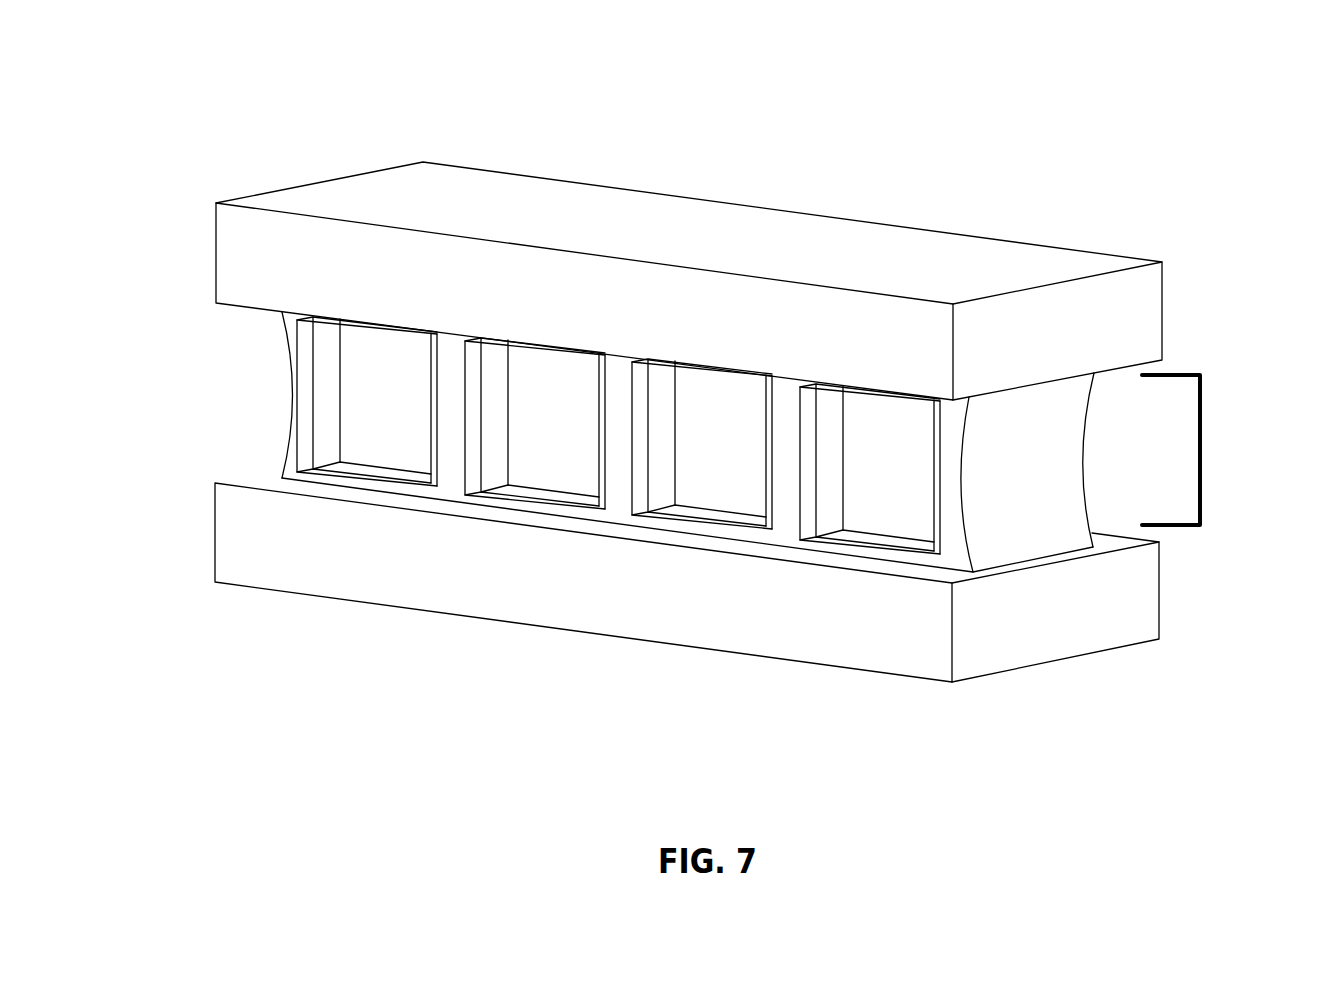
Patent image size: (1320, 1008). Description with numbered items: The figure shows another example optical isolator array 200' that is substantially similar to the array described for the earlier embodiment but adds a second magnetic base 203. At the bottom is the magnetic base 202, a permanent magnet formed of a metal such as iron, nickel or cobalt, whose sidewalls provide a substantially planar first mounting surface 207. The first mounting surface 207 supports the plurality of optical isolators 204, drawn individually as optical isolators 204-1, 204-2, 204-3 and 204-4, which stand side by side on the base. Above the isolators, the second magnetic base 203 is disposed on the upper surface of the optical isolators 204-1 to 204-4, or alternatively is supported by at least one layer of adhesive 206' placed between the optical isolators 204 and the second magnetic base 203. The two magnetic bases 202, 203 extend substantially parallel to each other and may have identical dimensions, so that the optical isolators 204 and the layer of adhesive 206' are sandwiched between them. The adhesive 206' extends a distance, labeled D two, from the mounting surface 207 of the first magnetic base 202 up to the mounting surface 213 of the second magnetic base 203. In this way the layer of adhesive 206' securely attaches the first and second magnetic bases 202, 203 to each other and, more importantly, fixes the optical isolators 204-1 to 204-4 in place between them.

The optical isolator array 200' is at (702, 364).
The magnetic base 202 is at (1155, 607).
The second magnetic base 203 is at (1162, 282).
The optical isolators 204 is at (210, 348).
The optical isolator 204-1 is at (312, 412).
The optical isolator 204-2 is at (485, 442).
The optical isolator 204-3 is at (651, 464).
The optical isolator 204-4 is at (827, 487).
The layer of adhesive 206' is at (721, 429).
The first mounting surface 207 is at (983, 573).
The mounting surface 213 is at (1007, 393).